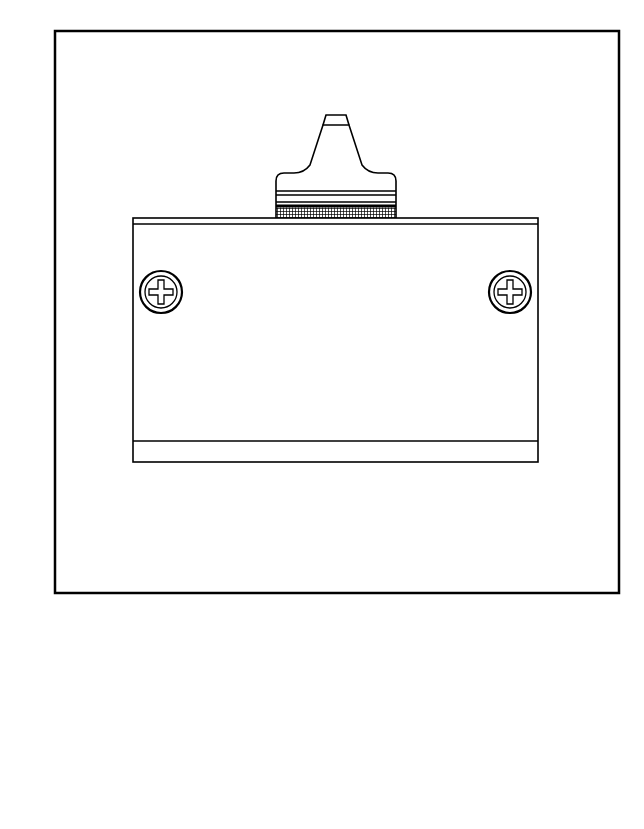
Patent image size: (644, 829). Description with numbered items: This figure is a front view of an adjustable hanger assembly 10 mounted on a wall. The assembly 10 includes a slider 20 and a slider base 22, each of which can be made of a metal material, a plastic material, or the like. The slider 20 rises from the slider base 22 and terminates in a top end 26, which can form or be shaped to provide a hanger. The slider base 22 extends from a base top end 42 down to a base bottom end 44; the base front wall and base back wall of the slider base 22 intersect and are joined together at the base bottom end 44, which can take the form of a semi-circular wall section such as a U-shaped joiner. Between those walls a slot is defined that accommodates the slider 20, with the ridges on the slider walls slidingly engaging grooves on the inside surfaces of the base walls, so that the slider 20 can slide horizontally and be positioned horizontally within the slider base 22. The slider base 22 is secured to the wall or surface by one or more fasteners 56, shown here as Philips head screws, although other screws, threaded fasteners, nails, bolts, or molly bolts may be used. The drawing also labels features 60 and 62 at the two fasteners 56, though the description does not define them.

The adjustable hanger assembly 10 is at (484, 162).
The slider 20 is at (318, 150).
The slider base 22 is at (540, 258).
The top end 26 is at (334, 115).
The base top end 42 is at (164, 218).
The base bottom end 44 is at (238, 462).
The fasteners 56 is at (335, 298).
The left fastener head 60 is at (173, 311).
The right fastener head 62 is at (506, 270).